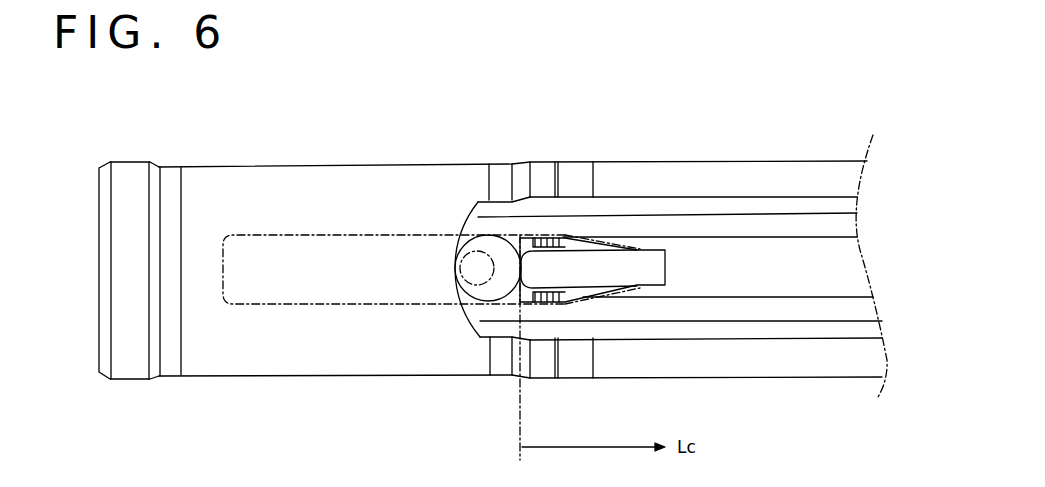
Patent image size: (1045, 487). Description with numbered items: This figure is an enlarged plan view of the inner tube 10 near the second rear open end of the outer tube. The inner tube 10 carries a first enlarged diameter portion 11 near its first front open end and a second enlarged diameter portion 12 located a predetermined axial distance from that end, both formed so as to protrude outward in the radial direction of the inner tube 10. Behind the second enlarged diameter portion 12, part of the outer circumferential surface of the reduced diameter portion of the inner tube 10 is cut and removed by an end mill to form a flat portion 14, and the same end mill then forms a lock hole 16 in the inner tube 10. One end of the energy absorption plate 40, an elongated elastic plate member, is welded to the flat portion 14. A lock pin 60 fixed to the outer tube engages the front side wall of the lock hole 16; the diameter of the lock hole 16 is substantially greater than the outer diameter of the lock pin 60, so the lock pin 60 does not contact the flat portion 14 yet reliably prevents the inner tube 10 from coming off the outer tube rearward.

The inner tube 10 is at (317, 163).
The first enlarged diameter portion 11 is at (133, 172).
The second enlarged diameter portion 12 is at (541, 173).
The flat portion 14 is at (797, 275).
The lock hole 16 is at (500, 291).
The energy absorption plate 40 is at (275, 305).
The lock pin 60 is at (473, 272).